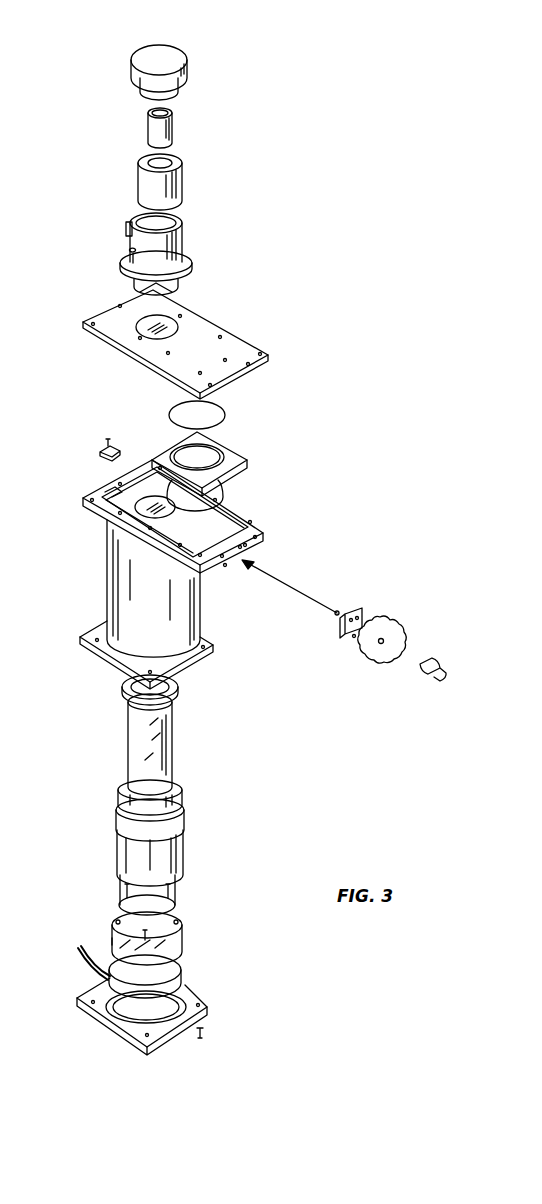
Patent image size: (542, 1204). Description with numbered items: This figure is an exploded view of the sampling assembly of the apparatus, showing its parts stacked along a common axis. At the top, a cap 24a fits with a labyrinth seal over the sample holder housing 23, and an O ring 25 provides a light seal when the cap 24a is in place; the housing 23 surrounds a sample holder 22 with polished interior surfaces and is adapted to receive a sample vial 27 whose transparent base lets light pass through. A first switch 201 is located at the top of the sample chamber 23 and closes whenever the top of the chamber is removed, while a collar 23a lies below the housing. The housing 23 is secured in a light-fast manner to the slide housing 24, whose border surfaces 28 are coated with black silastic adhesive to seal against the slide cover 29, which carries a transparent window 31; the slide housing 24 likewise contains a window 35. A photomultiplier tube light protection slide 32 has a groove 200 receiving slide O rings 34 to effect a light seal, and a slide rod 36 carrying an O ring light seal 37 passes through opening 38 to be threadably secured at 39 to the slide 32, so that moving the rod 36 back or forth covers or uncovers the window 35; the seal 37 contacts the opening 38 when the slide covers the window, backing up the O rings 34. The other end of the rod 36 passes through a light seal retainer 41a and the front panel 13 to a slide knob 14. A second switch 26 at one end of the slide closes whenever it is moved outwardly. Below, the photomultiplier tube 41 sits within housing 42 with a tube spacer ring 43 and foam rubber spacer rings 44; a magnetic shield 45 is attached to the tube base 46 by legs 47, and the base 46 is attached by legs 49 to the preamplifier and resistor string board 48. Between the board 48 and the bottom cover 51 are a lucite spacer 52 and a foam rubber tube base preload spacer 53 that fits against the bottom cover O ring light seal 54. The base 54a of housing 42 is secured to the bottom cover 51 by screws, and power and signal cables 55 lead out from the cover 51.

The front panel 13 is at (400, 622).
The slide knob 14 is at (440, 660).
The sample holder 22 is at (138, 181).
The sample holder housing 23 is at (183, 233).
The bushing collar 23a is at (133, 289).
The slide housing 24 is at (265, 536).
The cap 24a is at (176, 47).
The O ring 25 is at (140, 90).
The photomultiplier tube protection microswitch 26 is at (98, 445).
The sample vial 27 is at (174, 125).
The border surfaces 28 is at (140, 527).
The slide cover 29 is at (208, 318).
The window 31 is at (150, 335).
The photomultiplier tube light protection slide 32 is at (215, 450).
The slide O ring light seals 34 is at (168, 415).
The window 35 is at (150, 500).
The slide rod 36 is at (282, 582).
The O ring light seal 37 is at (340, 628).
The opening 38 is at (243, 558).
The threaded connection 39 is at (228, 478).
The photomultiplier tube 41 is at (176, 735).
The light seal retainer 41a is at (346, 614).
The housing 42 is at (105, 589).
The tube spacer ring 43 is at (122, 686).
The spacer rings 44 is at (116, 860).
The magnetic shield 45 is at (185, 843).
The tube base 46 is at (165, 905).
The legs 47 is at (122, 897).
The preamplifier and resistor string board 48 is at (112, 932).
The legs 49 is at (118, 921).
The bottom cover 51 is at (210, 1006).
The spacer 52 is at (185, 940).
The foam rubber tube base preload spacer 53 is at (183, 975).
The bottom cover O ring light seal 54 is at (122, 1018).
The base 54a is at (215, 643).
The power and signal cables 55 is at (80, 961).
The groove 200 is at (225, 456).
The first switch 201 is at (125, 228).